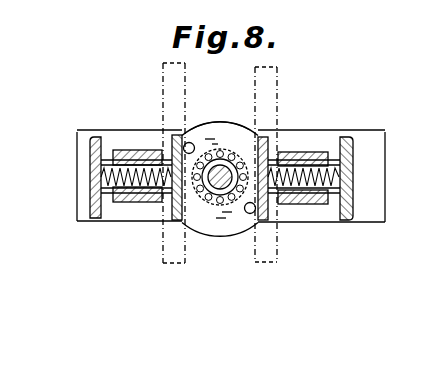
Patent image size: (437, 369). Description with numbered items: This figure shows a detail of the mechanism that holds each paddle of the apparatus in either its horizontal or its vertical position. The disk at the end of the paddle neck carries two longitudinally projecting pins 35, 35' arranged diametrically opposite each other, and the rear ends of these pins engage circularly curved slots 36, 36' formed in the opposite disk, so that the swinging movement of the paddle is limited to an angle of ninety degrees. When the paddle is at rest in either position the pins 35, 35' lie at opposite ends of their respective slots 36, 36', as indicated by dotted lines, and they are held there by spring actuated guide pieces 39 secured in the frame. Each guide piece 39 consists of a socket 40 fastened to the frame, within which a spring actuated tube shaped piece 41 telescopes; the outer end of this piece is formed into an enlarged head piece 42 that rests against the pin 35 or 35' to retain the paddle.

The pin 35 is at (220, 199).
The pin 35' is at (220, 105).
The circularly curved slot 36 is at (290, 159).
The circularly curved slot 36' is at (150, 205).
The spring actuated guide piece 39 is at (231, 174).
The socket 40 is at (312, 153).
The spring actuated tube shaped piece 41 is at (110, 224).
The enlarged head piece 42 is at (306, 126).